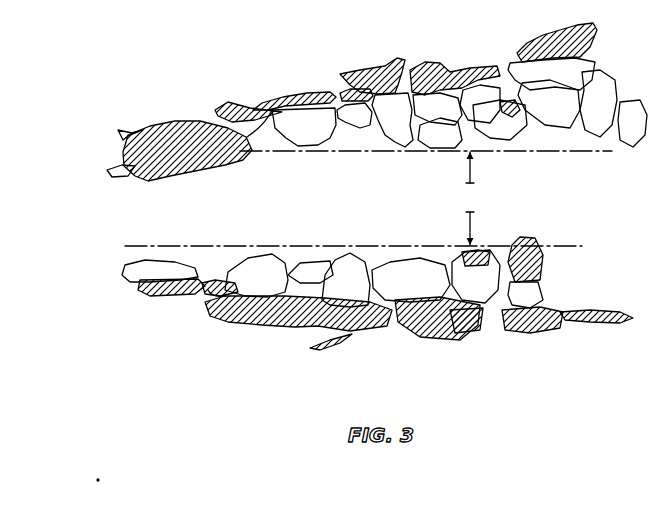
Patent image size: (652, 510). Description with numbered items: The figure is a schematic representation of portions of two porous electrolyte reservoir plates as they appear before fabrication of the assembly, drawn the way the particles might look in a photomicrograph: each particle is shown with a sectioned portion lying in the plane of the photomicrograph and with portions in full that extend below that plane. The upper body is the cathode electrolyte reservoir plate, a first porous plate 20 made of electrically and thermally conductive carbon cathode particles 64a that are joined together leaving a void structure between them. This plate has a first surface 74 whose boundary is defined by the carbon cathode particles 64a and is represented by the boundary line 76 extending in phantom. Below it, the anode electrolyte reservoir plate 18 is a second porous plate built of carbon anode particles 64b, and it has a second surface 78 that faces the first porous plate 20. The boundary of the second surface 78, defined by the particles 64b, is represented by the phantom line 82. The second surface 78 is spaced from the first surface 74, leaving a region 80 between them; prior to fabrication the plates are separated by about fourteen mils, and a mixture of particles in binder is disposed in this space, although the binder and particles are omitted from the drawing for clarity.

The first porous plate 20 is at (118, 127).
The carbon cathode particles 64a is at (176, 137).
The first surface 74 is at (112, 178).
The boundary line 76 is at (581, 155).
The region 80 is at (383, 214).
The phantom line 82 is at (218, 246).
The second surface 78 is at (112, 249).
The anode electrolyte reservoir plate 18 is at (372, 294).
The carbon anode particles 64b is at (240, 312).